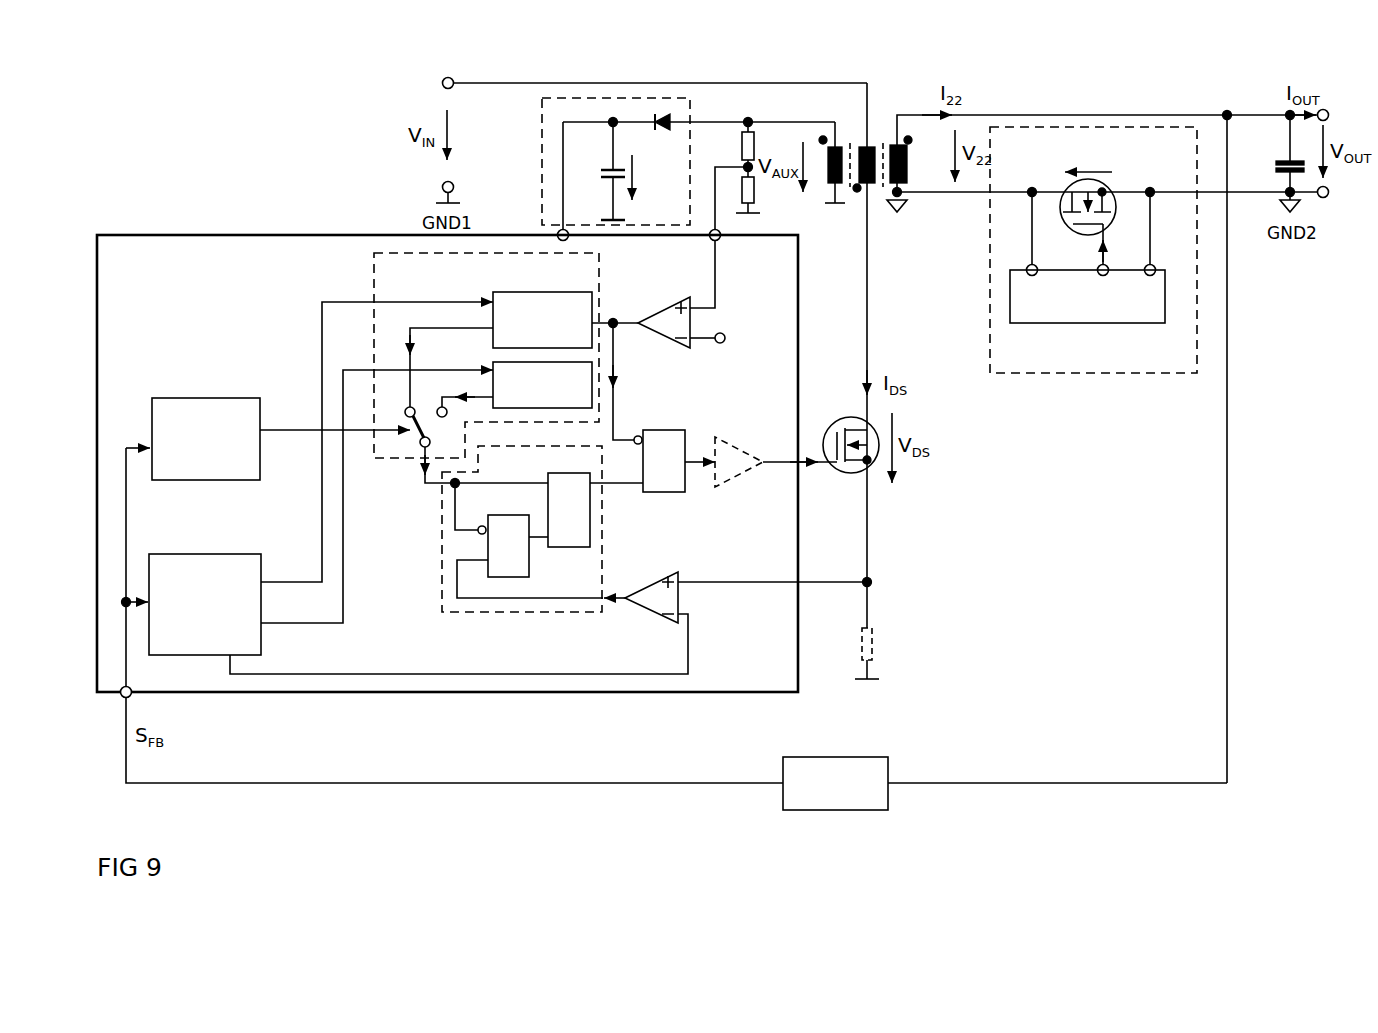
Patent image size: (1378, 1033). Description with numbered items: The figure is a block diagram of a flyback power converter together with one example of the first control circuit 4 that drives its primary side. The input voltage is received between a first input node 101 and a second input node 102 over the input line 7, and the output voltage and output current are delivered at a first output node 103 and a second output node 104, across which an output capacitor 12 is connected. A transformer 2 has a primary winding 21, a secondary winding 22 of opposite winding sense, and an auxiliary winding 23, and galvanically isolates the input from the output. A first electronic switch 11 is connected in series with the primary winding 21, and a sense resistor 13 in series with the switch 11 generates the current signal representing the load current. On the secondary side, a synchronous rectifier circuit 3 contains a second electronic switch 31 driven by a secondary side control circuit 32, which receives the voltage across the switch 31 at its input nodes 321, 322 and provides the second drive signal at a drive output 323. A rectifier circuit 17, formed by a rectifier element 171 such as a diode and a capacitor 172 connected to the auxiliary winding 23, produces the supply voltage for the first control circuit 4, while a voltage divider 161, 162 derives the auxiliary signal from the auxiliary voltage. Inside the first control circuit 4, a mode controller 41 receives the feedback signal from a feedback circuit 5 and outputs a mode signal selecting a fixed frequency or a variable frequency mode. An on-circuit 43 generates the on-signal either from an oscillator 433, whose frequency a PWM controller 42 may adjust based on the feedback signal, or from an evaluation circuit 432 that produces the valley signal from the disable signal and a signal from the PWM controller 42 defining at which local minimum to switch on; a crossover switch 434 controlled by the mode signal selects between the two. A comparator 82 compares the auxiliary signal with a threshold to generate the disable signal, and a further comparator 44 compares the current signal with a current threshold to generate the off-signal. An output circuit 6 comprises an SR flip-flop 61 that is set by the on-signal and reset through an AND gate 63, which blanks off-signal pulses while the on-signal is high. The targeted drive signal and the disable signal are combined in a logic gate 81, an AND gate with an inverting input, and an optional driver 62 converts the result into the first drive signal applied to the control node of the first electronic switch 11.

The first input node 101 is at (442, 81).
The second input node 102 is at (442, 183).
The first output node 103 is at (1327, 108).
The second output node 104 is at (1326, 198).
The input line 7 is at (649, 83).
The supply circuit 17 is at (663, 168).
The rectifier element 171 is at (667, 139).
The capacitor 172 is at (600, 171).
The voltage divider 161 is at (742, 152).
The voltage divider 162 is at (756, 199).
The transformer 2 is at (1063, 137).
The primary winding 21 is at (859, 148).
The secondary winding 22 is at (910, 176).
The auxiliary winding 23 is at (828, 181).
The synchronous rectifier circuit 3 is at (1094, 275).
The second electronic switch 31 is at (1113, 190).
The control circuit 32 is at (1092, 325).
The input node 321 is at (1027, 264).
The input node 322 is at (1155, 264).
The drive output 323 is at (1108, 262).
The output capacitor 12 is at (1276, 163).
The first control circuit 4 is at (220, 235).
The mode controller 41 is at (206, 439).
The PWM controller 42 is at (205, 604).
The on-circuit 43 is at (515, 355).
The evaluation circuit 432 is at (532, 292).
The oscillator 433 is at (542, 385).
The crossover switch 434 is at (435, 427).
The output circuit 6 is at (494, 529).
The flip-flop 61 is at (569, 499).
The driver 62 is at (730, 456).
The AND gate 63 is at (529, 540).
The logic gate 81 is at (668, 494).
The comparator 82 is at (698, 329).
The further comparator 44 is at (642, 620).
The first electronic switch 11 is at (848, 418).
The sense resistor 13 is at (877, 644).
The feedback circuit 5 is at (890, 775).